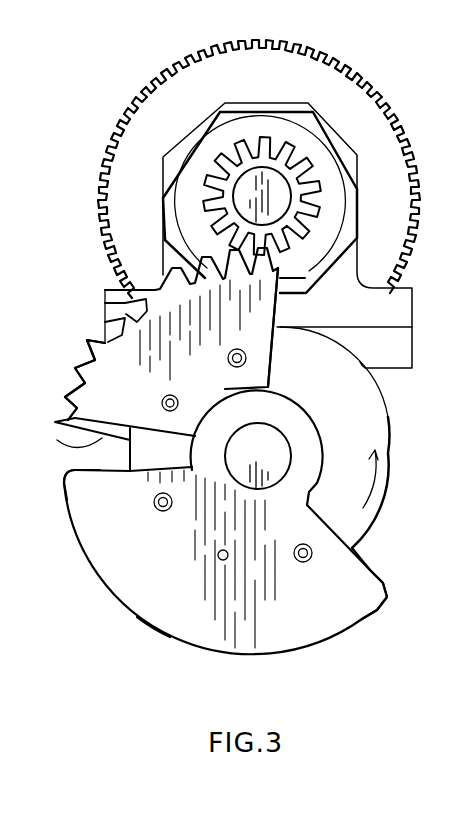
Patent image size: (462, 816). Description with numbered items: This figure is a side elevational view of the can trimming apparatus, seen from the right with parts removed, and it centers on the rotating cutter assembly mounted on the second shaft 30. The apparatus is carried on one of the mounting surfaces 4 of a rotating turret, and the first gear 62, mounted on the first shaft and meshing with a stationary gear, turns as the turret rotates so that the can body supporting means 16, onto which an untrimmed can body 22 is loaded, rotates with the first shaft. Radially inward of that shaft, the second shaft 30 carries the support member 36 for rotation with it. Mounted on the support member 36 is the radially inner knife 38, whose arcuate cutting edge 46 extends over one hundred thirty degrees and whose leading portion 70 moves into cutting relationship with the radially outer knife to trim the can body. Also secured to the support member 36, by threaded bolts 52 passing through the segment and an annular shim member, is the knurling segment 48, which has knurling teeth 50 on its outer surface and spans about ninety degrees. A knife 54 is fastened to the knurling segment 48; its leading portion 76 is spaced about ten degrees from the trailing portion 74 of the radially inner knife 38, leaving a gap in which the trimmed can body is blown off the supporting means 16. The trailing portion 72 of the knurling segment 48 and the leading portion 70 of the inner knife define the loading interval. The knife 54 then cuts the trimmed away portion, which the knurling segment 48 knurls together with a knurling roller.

The mounting surface 4 is at (393, 308).
The can body supporting means 16 is at (313, 170).
The untrimmed can body 22 is at (232, 182).
The second shaft 30 is at (272, 452).
The support member 36 is at (370, 441).
The radially inner knife 38 is at (187, 597).
The arcuate cutting edge 46 is at (150, 608).
The knurling segment 48 is at (150, 388).
The knurling teeth 50 is at (78, 364).
The threaded bolts 52 is at (237, 349).
The knife 54 is at (65, 397).
The first gear 62 is at (330, 83).
The leading portion 70 is at (372, 577).
The trailing portion 72 is at (253, 320).
The trailing portion 74 is at (67, 470).
The leading portion 76 is at (78, 433).